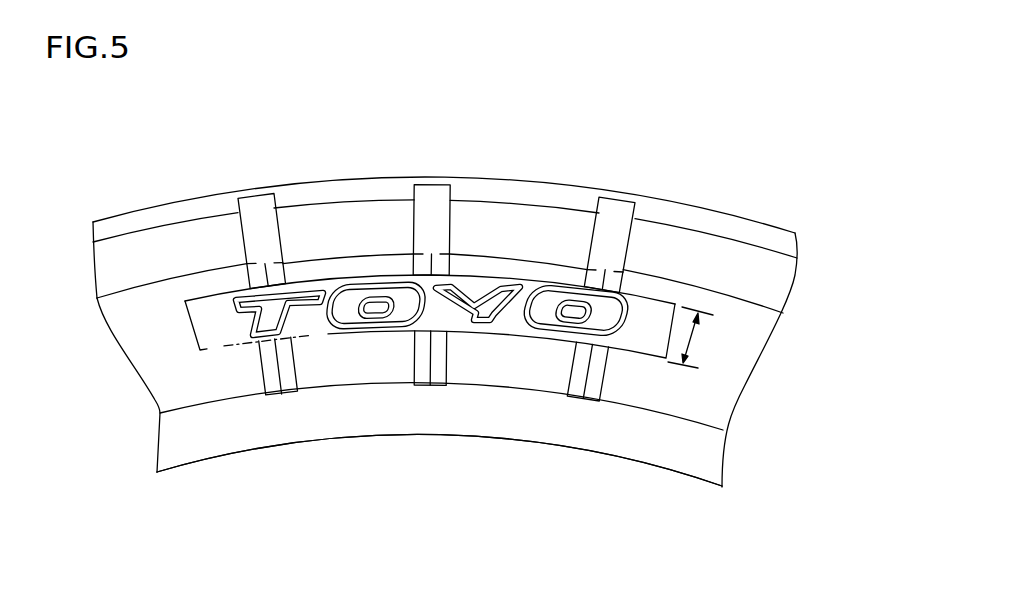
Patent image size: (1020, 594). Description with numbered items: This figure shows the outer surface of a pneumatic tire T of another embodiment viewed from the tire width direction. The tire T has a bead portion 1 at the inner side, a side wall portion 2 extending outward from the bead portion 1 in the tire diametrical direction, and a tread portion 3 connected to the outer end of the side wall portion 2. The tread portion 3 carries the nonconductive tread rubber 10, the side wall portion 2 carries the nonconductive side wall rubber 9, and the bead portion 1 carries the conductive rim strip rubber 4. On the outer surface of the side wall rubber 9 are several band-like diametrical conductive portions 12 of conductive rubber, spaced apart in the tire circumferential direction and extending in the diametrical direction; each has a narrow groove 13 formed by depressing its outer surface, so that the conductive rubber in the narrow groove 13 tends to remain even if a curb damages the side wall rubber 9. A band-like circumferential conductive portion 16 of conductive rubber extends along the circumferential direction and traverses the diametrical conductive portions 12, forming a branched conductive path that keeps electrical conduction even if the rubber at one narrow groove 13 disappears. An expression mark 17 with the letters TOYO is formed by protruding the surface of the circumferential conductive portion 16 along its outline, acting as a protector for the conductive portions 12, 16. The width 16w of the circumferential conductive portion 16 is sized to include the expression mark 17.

The bead portion 1 is at (233, 471).
The side wall portion 2 is at (121, 380).
The tread portion 3 is at (190, 189).
The rim strip rubber 4 is at (290, 442).
The side wall rubber 9 is at (635, 394).
The tread rubber 10 is at (683, 212).
The diametrical conductive portion 12 is at (254, 202).
The narrow groove 13 is at (271, 367).
The circumferential conductive portion 16 is at (495, 328).
The expression mark 17 is at (517, 293).
The width of the circumferential conductive portion 16w is at (705, 337).
The pneumatic tire T is at (740, 176).